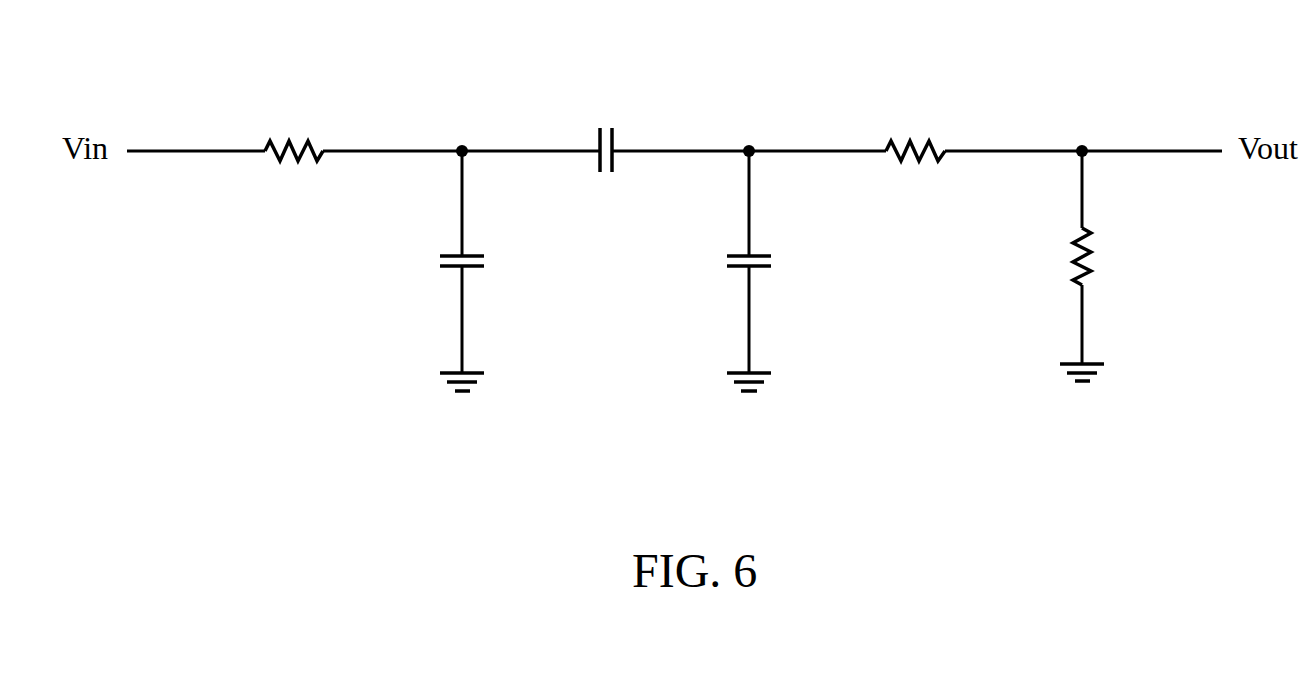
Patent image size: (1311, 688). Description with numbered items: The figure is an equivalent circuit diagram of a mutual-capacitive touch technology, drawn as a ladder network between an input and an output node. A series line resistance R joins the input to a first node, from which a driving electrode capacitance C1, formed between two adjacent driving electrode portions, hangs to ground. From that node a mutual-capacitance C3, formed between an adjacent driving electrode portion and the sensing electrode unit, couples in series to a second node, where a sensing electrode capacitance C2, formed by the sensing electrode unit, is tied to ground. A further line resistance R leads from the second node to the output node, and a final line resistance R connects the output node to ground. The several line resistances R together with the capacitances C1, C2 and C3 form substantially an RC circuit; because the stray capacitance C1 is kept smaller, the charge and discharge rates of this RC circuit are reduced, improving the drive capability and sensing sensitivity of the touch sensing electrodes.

The line resistance R is at (298, 140).
The driving electrode capacitance C1 is at (486, 260).
The sensing electrode capacitance C2 is at (773, 260).
The mutual-capacitance C3 is at (605, 118).